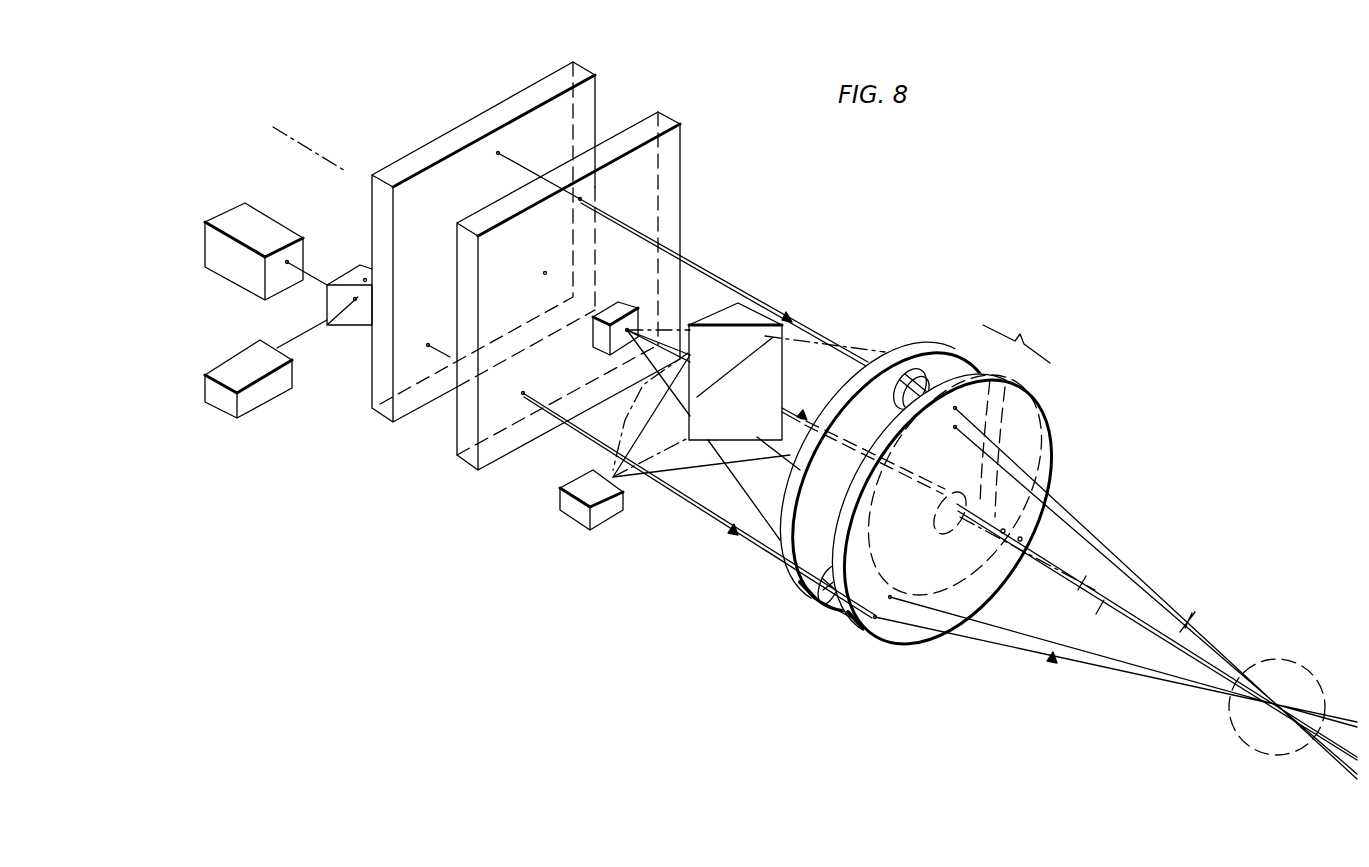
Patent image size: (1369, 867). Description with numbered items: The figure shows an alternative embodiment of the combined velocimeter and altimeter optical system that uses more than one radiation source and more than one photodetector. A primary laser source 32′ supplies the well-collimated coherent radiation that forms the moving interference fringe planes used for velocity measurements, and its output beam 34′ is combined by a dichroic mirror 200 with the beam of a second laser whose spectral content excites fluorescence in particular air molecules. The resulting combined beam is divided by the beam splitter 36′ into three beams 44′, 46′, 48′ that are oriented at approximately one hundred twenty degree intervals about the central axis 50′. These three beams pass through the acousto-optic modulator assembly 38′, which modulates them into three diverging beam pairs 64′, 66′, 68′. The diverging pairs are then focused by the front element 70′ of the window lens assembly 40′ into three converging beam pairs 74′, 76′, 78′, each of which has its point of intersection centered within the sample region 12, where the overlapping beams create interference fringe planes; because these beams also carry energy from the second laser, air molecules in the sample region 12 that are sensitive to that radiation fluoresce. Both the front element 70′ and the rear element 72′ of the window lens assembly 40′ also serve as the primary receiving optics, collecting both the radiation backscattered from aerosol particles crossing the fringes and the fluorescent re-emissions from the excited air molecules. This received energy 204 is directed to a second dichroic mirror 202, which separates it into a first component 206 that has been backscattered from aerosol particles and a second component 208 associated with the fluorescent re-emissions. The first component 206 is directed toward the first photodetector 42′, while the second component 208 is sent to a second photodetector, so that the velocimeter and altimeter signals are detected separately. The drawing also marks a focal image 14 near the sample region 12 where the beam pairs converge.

The sample region 12 is at (1297, 643).
The image 14 is at (1235, 603).
The primary laser source 32′ is at (238, 206).
The output beam of the first laser 34′ is at (312, 273).
The beam splitter 36′ is at (594, 72).
The acousto-optic modulator assembly 38′ is at (680, 123).
The window lens assembly 40′ is at (920, 493).
The first photodetector 42′ is at (632, 283).
The first beam 44′ is at (446, 327).
The second beam 46′ is at (540, 176).
The third beam 48′ is at (550, 253).
The central axis 50′ is at (307, 148).
The first diverging beam pair 64′ is at (733, 530).
The second diverging beam pair 66′ is at (812, 292).
The third diverging beam pair 68′ is at (815, 396).
The front element 70′ is at (1045, 407).
The rear element 72′ is at (942, 331).
The first converging beam pair 74′ is at (1051, 660).
The second converging beam pair 76′ is at (1083, 531).
The third converging beam pair 78′ is at (1080, 583).
The dichroic mirror 200 is at (365, 280).
The second dichroic mirror 202 is at (740, 303).
The received energy 204 is at (848, 338).
The first component 206 is at (644, 411).
The second component 208 is at (700, 407).